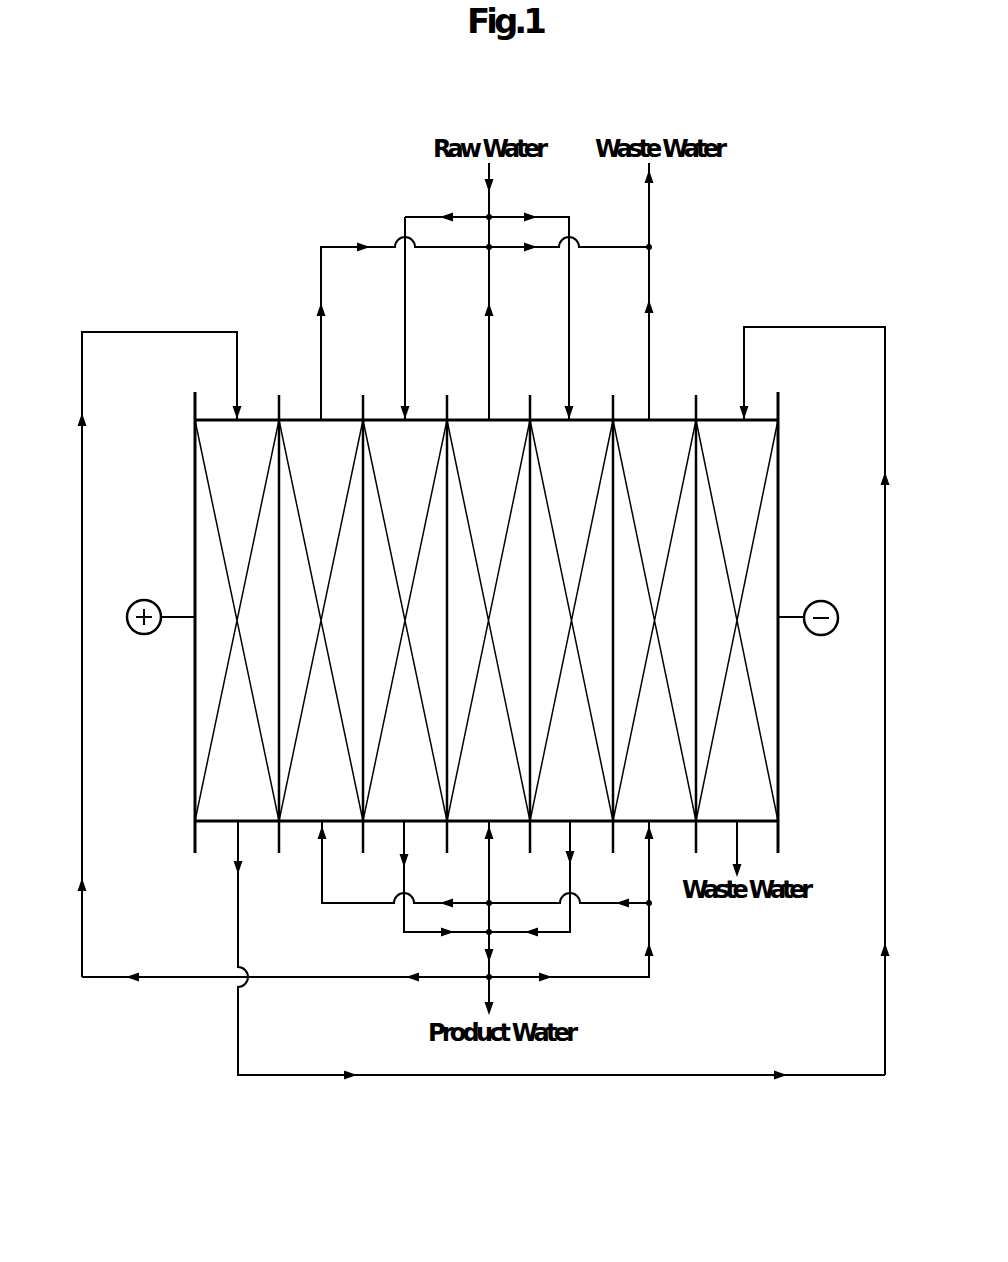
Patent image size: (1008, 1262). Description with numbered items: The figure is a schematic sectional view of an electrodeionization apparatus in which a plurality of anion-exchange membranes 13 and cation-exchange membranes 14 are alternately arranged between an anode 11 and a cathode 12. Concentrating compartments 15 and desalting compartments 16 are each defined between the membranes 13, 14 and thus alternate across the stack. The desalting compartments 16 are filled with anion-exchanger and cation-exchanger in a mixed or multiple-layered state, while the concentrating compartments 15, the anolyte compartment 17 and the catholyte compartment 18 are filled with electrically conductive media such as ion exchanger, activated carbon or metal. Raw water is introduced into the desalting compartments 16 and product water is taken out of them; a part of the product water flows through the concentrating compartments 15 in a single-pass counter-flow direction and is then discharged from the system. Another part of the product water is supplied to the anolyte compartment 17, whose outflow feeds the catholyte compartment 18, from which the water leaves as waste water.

The anode 11 is at (195, 511).
The cathode 12 is at (778, 517).
The anion-exchange membrane 13 is at (363, 395).
The cation-exchange membrane 14 is at (279, 395).
The concentrating compartment 15 is at (336, 568).
The desalting compartment 16 is at (419, 568).
The anolyte compartment 17 is at (253, 568).
The catholyte compartment 18 is at (695, 568).